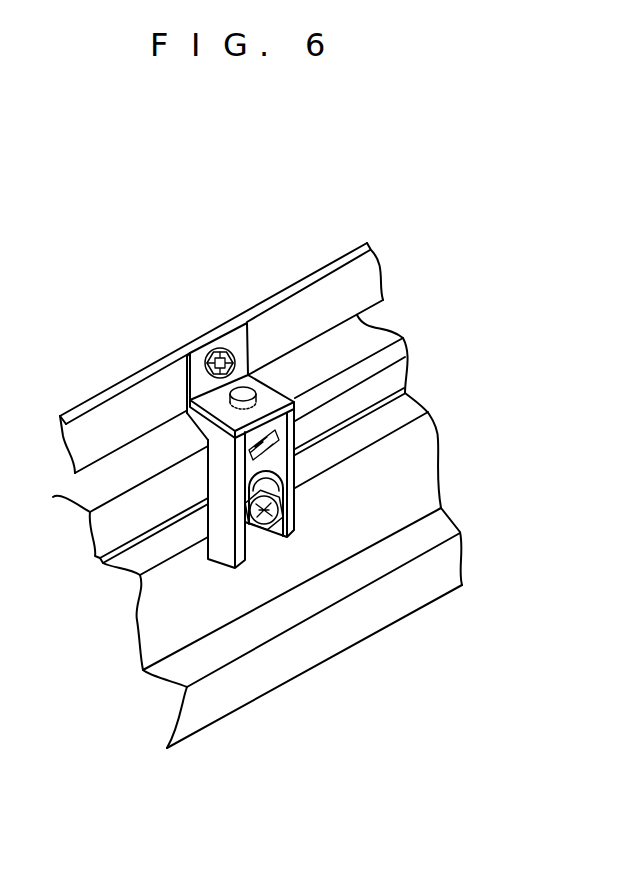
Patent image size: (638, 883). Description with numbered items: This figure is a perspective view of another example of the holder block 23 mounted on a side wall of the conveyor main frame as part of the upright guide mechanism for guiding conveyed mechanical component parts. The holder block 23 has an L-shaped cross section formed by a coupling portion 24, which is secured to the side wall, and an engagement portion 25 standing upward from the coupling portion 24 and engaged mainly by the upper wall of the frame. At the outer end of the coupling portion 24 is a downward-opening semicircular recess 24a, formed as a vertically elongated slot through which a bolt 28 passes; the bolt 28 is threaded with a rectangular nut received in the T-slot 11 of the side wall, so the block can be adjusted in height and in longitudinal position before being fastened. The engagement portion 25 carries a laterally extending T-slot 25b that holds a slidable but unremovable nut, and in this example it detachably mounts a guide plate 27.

The T-slot 11 is at (410, 415).
The holder block 23 is at (296, 517).
The coupling portion 24 is at (226, 545).
The semicircular recess 24a is at (263, 541).
The engagement portion 25 is at (206, 433).
The T-slot 25b is at (298, 421).
The guide plate 27 is at (232, 304).
The bolt 28 is at (300, 488).